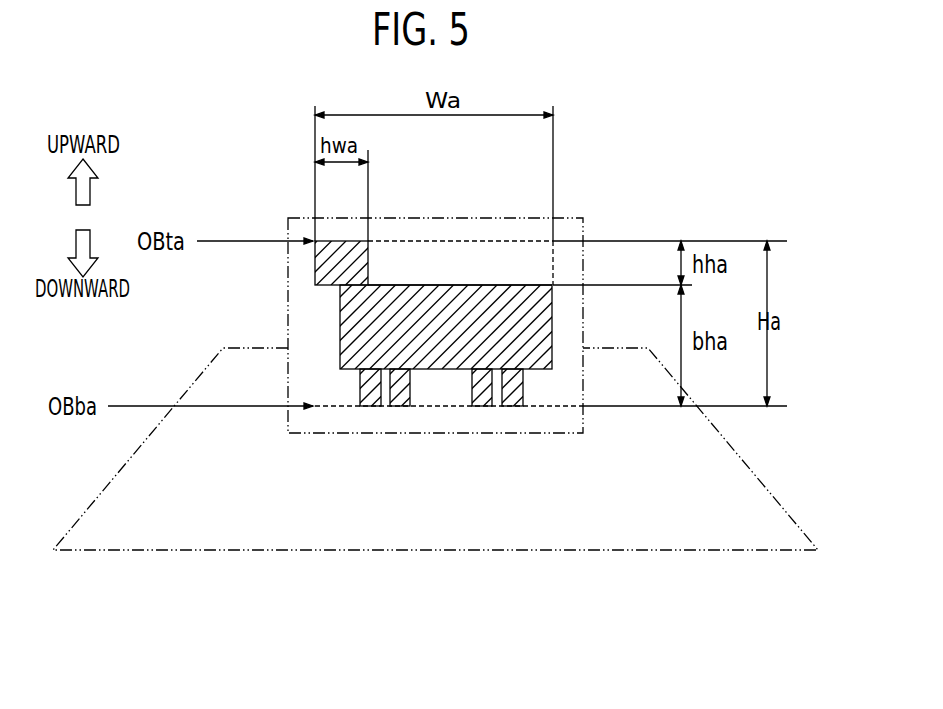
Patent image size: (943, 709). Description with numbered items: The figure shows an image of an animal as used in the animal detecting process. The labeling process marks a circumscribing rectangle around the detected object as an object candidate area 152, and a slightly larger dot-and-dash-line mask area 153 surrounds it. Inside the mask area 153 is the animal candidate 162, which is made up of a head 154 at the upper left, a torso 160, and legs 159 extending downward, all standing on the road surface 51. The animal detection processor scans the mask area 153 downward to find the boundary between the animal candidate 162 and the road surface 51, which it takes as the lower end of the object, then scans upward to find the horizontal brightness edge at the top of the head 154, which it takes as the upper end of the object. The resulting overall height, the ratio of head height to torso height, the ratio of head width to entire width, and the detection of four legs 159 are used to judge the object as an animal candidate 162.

The road surface 51 is at (667, 537).
The object candidate area 152 is at (442, 408).
The mask area 153 is at (453, 217).
The head 154 is at (338, 241).
The legs 159 is at (400, 398).
The torso 160 is at (491, 295).
The animal candidate 162 is at (416, 275).